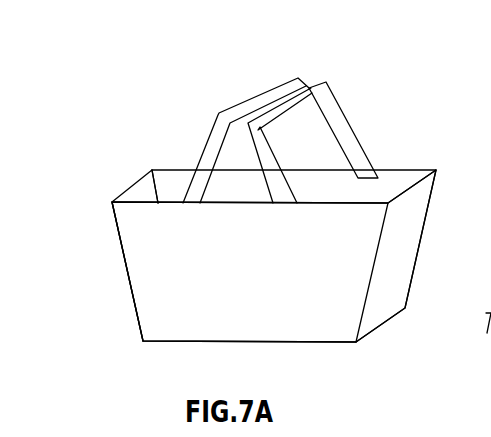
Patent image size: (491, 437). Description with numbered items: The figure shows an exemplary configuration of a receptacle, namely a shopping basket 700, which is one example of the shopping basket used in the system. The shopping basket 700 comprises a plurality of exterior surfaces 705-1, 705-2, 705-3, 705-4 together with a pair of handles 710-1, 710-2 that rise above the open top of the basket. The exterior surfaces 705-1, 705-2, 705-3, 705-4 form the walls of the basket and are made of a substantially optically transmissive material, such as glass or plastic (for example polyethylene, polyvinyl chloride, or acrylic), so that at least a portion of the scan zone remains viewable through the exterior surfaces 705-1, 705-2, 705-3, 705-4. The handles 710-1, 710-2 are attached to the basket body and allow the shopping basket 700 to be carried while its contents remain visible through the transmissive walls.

The shopping basket 700 is at (318, 45).
The exterior surface 705-1 is at (252, 312).
The exterior surface 705-2 is at (115, 235).
The exterior surface 705-3 is at (395, 255).
The exterior surface 705-4 is at (247, 190).
The handle 710-1 is at (262, 95).
The handle 710-2 is at (340, 110).